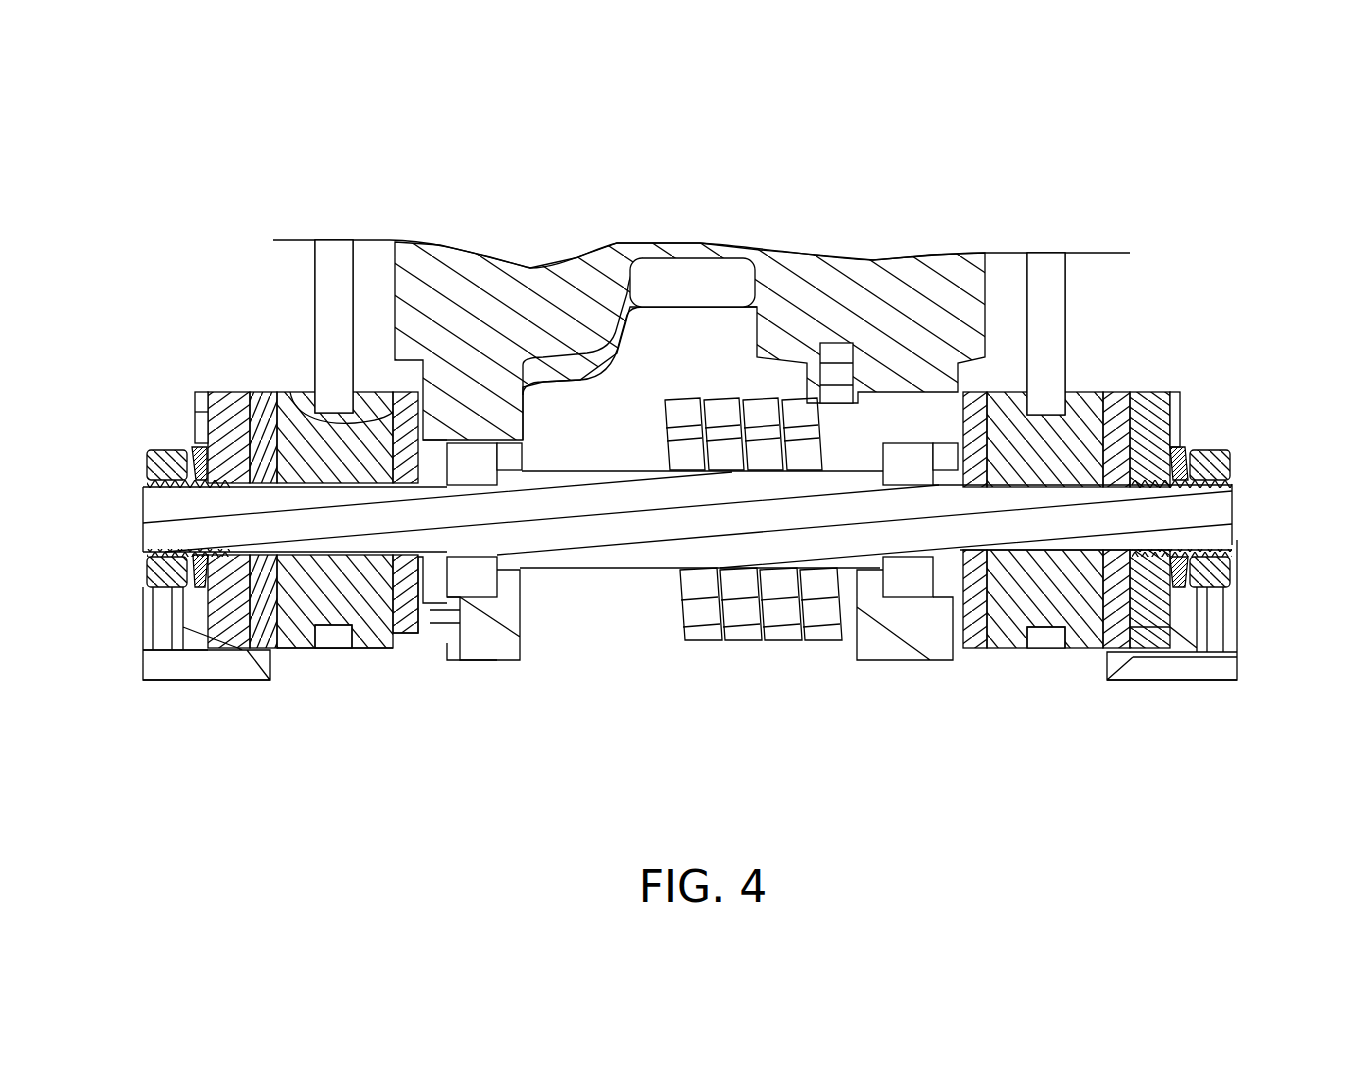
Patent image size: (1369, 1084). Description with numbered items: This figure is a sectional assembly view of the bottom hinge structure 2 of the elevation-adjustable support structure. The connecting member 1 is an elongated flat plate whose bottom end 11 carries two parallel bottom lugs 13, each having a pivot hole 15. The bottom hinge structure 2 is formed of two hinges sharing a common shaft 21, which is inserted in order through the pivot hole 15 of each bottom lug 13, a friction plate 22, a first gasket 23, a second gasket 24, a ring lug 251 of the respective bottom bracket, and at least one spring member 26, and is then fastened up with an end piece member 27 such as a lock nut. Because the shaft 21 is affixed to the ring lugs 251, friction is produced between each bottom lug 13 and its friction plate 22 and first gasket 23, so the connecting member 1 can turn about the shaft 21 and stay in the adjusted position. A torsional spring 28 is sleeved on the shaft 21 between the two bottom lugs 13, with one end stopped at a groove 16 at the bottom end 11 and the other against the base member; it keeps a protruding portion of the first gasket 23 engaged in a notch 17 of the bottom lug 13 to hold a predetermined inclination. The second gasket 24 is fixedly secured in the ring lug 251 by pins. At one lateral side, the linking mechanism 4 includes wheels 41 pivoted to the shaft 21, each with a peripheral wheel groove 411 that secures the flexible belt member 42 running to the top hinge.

The connecting member 1 is at (873, 257).
The bottom end 11 is at (557, 423).
The bottom lugs 13 is at (507, 607).
The pivot hole 15 is at (910, 443).
The groove 16 is at (707, 340).
The notch 17 is at (447, 647).
The bottom hinge structure 2 is at (1201, 715).
The shaft 21 is at (1190, 518).
The friction plate 22 is at (418, 435).
The first gasket 23 is at (293, 392).
The second gasket 24 is at (248, 653).
The ring lug 251 is at (210, 647).
The spring member 26 is at (203, 587).
The end piece member 27 is at (170, 450).
The torsional spring 28 is at (743, 640).
The linking mechanism 4 is at (377, 640).
The wheels 41 is at (297, 648).
The wheel groove 411 is at (340, 640).
The flexible belt member 42 is at (340, 290).